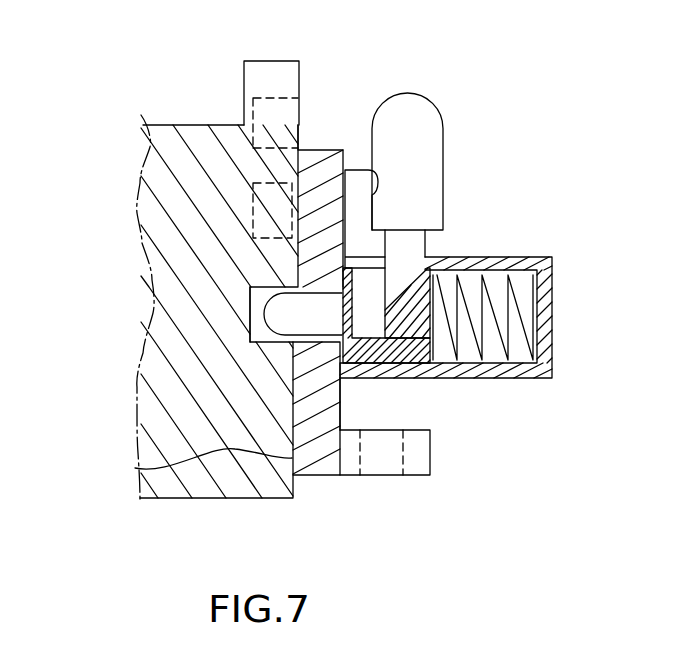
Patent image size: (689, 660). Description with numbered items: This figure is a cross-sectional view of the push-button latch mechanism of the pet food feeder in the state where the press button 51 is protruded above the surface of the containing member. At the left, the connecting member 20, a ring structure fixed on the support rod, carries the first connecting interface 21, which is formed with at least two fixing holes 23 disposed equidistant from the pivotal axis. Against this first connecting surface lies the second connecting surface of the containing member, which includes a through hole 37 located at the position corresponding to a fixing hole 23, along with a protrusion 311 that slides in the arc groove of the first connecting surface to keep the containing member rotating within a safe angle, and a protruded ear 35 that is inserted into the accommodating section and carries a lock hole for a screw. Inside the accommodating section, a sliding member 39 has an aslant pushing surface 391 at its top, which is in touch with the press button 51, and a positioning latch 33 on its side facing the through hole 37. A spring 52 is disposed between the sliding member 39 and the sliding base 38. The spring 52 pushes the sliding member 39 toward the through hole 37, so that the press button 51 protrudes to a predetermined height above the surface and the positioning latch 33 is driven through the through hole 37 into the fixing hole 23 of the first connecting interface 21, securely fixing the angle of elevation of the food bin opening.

The connecting member 20 is at (160, 406).
The first connecting interface 21 is at (135, 468).
The fixing hole 23 is at (268, 113).
The through hole 37 is at (325, 307).
The positioning latch 33 is at (308, 292).
The press button 51 is at (435, 158).
The aslant pushing surface 391 is at (405, 272).
The sliding base 38 is at (548, 308).
The sliding member 39 is at (390, 347).
The spring 52 is at (478, 343).
The protrusion 311 is at (313, 403).
The protruded ear 35 is at (432, 466).